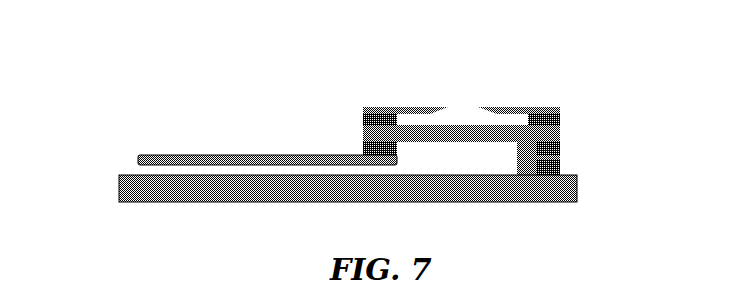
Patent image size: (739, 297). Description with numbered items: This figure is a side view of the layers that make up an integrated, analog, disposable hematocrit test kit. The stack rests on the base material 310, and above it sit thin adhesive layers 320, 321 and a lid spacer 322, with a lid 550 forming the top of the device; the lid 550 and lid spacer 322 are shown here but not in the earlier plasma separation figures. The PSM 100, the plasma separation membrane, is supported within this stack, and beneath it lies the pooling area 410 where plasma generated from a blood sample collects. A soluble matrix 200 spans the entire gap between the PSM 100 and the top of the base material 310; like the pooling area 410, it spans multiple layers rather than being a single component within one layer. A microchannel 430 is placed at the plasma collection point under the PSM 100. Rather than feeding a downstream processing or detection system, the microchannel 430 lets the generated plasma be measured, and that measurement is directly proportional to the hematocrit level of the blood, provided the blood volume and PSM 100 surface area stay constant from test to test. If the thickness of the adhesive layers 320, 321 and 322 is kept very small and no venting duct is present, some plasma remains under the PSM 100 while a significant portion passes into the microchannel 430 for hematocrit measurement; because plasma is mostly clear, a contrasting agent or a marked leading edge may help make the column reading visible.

The PSM 100 is at (428, 135).
The soluble matrix 200 is at (517, 173).
The base material 310 is at (348, 188).
The adhesive layer 320 is at (561, 165).
The adhesive layer 321 is at (561, 142).
The lid spacer 322 is at (562, 119).
The pooling area 410 is at (457, 158).
The microchannel 430 is at (287, 170).
The lid 550 is at (448, 106).